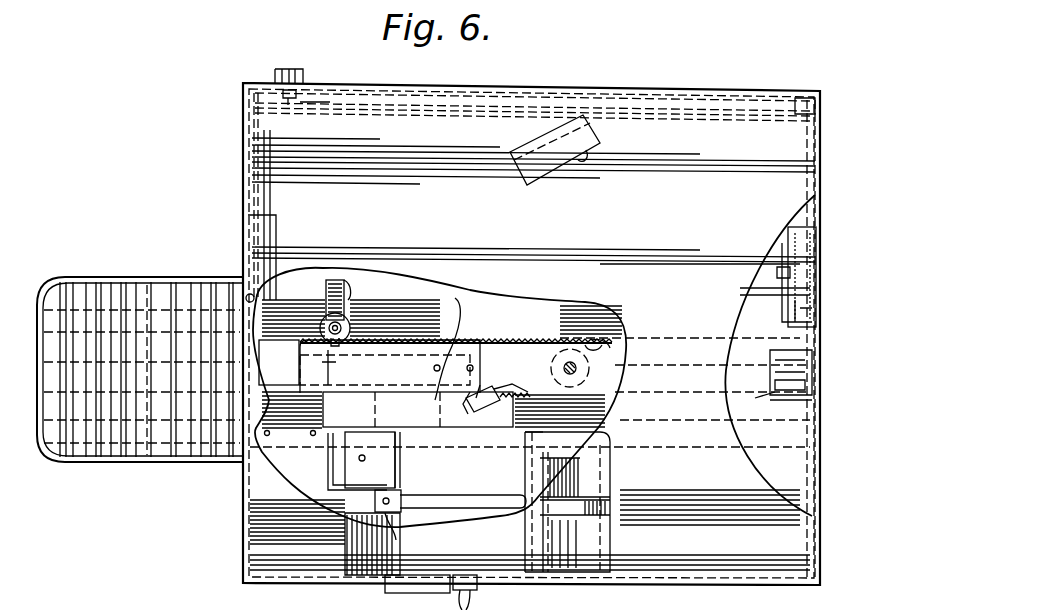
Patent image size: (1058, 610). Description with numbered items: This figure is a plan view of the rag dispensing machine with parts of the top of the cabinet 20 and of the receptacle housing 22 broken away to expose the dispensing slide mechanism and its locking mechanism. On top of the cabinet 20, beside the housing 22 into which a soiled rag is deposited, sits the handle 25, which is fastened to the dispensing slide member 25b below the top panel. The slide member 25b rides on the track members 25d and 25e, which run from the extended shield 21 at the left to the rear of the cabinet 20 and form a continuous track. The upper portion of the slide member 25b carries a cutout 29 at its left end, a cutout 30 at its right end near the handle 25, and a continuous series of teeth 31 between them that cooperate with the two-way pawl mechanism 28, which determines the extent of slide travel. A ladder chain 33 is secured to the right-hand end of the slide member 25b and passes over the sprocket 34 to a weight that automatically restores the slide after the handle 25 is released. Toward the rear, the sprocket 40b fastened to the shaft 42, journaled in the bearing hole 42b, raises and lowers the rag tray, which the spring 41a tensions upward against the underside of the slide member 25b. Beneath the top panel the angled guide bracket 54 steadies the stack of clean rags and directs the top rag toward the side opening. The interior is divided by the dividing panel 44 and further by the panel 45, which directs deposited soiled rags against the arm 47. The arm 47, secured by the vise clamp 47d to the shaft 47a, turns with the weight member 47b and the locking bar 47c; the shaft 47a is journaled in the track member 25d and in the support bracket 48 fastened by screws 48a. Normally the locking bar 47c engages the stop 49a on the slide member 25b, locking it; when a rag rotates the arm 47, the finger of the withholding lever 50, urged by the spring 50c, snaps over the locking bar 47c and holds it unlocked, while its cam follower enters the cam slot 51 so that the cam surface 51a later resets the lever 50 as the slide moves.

The cabinet 20 is at (240, 159).
The extended shield 21 is at (42, 292).
The housing 22 is at (583, 478).
The handle 25 is at (584, 368).
The dispensing slide member 25b is at (800, 383).
The track member 25d is at (245, 467).
The track member 25e is at (248, 294).
The two-way pawl mechanism 28 is at (352, 316).
The cutout 29 is at (328, 356).
The cutout 30 is at (605, 336).
The teeth 31 is at (476, 337).
The ladder chain 33 is at (755, 398).
The sprocket 34 is at (805, 372).
The sprocket 40b is at (790, 252).
The spring 41a is at (279, 362).
The shaft 42 is at (765, 288).
The bearing hole 42b is at (800, 318).
The dividing panel 44 is at (748, 440).
The panel 45 is at (527, 468).
The arm 47 is at (463, 432).
The shaft 47a is at (388, 488).
The weight member 47b is at (368, 470).
The locking bar 47c is at (398, 397).
The vise clamp 47d is at (392, 528).
The support bracket 48 is at (328, 463).
The screws 48a is at (290, 444).
The stop 49a is at (390, 347).
The locking bar withholding lever 50 is at (475, 407).
The spring 50c is at (476, 390).
The cam slot 51 is at (478, 392).
The cam surface 51a is at (508, 394).
The guide bracket 54 is at (600, 148).